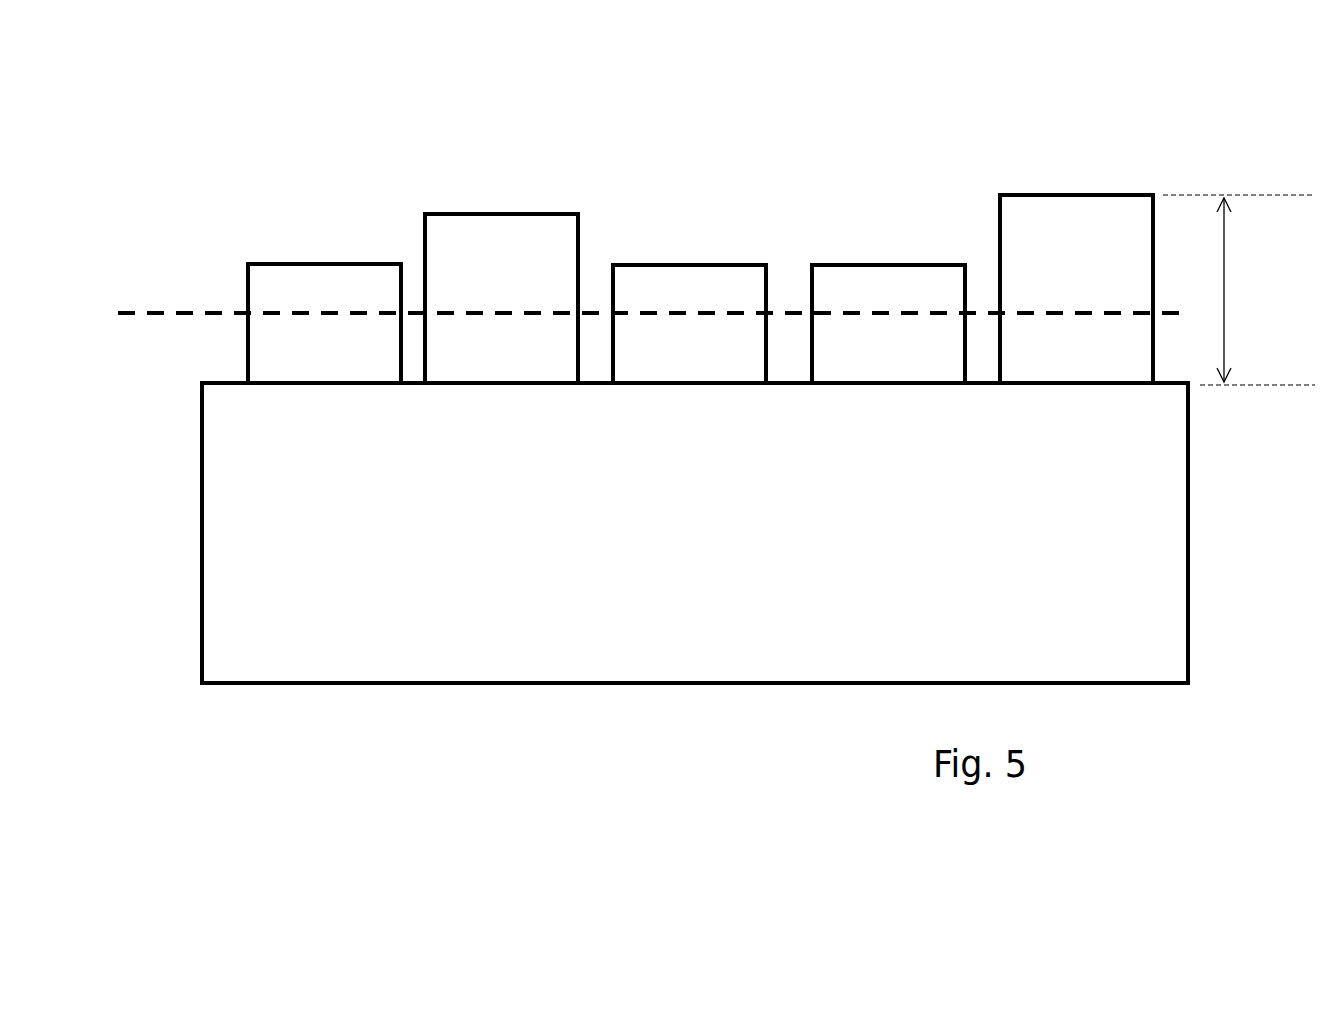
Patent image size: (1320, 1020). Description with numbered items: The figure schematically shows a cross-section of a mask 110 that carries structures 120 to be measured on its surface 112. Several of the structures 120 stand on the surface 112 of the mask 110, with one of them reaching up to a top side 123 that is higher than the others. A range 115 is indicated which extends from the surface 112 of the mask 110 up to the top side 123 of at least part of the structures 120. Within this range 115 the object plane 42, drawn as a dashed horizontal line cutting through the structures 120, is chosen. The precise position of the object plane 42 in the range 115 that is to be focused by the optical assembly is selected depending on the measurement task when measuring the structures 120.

The mask 110 is at (722, 553).
The structures 120 is at (323, 287).
The top side 123 is at (1091, 193).
The object plane 42 is at (178, 303).
The surface 112 is at (237, 380).
The range 115 is at (1239, 290).